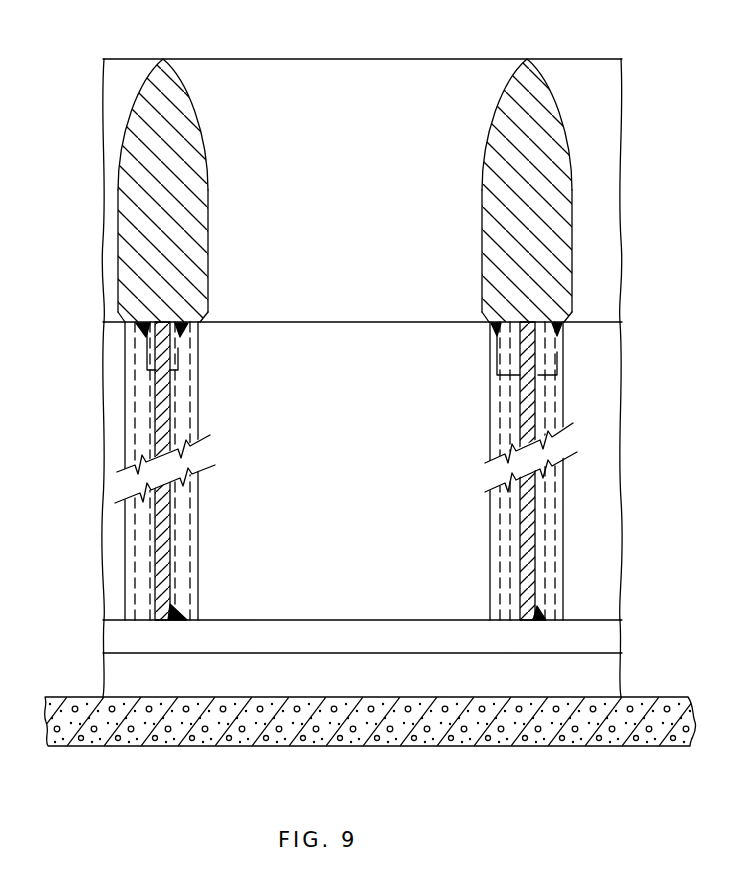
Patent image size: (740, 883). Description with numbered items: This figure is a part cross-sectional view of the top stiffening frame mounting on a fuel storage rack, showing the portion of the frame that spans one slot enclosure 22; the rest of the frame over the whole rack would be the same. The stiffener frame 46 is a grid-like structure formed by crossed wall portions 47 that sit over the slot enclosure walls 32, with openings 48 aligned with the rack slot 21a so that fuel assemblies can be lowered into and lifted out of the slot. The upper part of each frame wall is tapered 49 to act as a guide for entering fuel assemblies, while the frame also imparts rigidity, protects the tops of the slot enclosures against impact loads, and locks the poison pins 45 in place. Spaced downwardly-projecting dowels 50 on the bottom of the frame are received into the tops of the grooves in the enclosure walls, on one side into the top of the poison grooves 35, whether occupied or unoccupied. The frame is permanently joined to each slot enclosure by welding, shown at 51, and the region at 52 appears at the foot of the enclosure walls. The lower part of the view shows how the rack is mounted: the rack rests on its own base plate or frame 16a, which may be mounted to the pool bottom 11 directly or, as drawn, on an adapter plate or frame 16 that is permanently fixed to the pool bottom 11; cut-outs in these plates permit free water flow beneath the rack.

The openings 48 is at (340, 75).
The tapered upper part 49 is at (193, 100).
The crossed wall portions 47 is at (366, 191).
The stiffening frame 46 is at (552, 301).
The welding 51 is at (203, 325).
The downwardly-projecting dowels 50 is at (145, 352).
The slot enclosure 22 is at (592, 367).
The rack slot 21a is at (355, 377).
The poison pins 45 is at (560, 405).
The poison grooves 35 is at (135, 538).
The slot enclosure walls 32 is at (165, 580).
The bottom wedge 52 is at (175, 615).
The base plate or frame 16a is at (622, 643).
The adapter plate or frame 16 is at (620, 682).
The pool bottom 11 is at (655, 747).